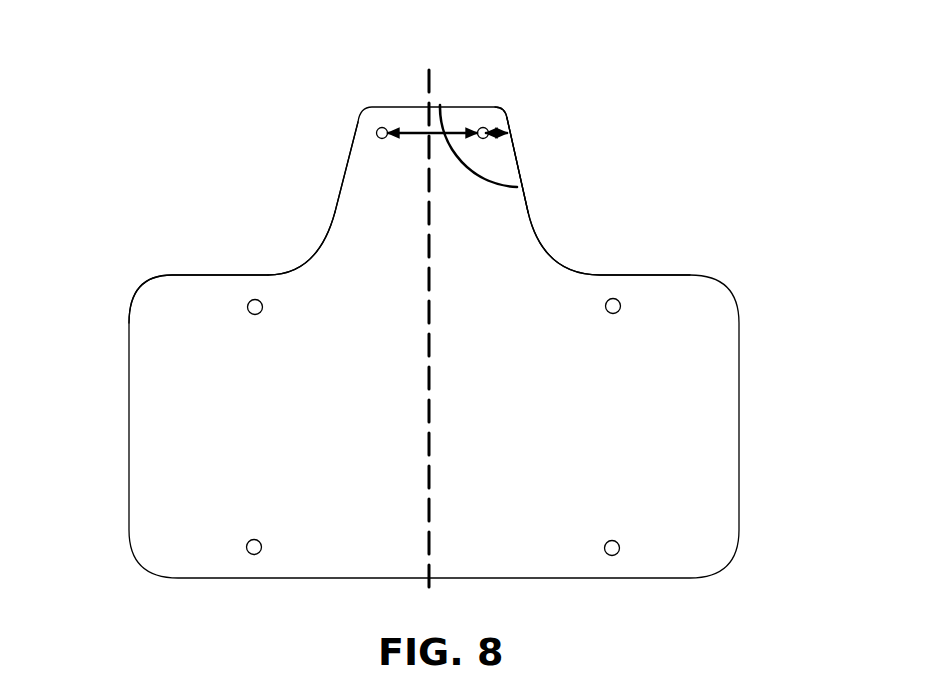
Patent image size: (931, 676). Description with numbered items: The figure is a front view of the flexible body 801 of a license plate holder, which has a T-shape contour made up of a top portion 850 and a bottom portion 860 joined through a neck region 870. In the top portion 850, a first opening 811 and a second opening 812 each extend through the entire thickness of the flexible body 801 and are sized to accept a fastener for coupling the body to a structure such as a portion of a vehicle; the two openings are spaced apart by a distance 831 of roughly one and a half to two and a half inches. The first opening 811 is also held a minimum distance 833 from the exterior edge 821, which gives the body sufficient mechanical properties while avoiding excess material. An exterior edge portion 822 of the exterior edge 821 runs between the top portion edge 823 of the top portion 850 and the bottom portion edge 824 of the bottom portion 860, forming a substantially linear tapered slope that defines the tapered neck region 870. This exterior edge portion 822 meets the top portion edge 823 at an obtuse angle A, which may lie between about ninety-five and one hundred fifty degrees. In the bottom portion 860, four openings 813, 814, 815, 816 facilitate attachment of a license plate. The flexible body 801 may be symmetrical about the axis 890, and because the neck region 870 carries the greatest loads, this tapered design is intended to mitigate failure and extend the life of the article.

The flexible body 801 is at (733, 310).
The first opening 811 is at (478, 130).
The second opening 812 is at (378, 129).
The opening 813 is at (617, 312).
The opening 814 is at (609, 539).
The opening 815 is at (249, 540).
The opening 816 is at (250, 313).
The exterior edge 821 is at (507, 128).
The exterior edge portion 822 is at (517, 187).
The top portion edge 823 is at (497, 112).
The bottom portion edge 824 is at (619, 274).
The distance 831 is at (408, 132).
The minimum distance 833 is at (495, 130).
The top portion 850 is at (344, 135).
The bottom portion 860 is at (141, 270).
The neck region 870 is at (317, 197).
The axis 890 is at (431, 542).
The angle A is at (463, 165).